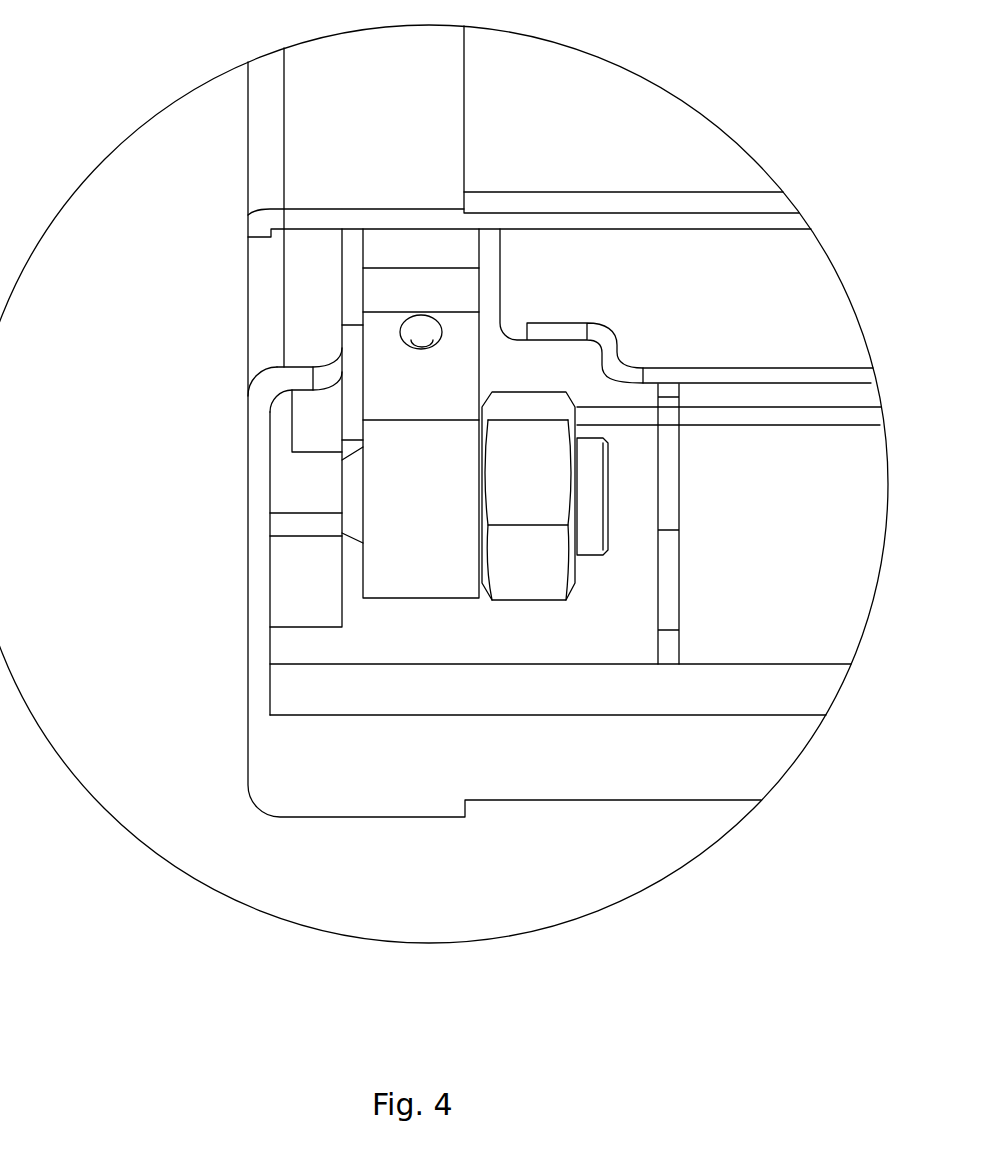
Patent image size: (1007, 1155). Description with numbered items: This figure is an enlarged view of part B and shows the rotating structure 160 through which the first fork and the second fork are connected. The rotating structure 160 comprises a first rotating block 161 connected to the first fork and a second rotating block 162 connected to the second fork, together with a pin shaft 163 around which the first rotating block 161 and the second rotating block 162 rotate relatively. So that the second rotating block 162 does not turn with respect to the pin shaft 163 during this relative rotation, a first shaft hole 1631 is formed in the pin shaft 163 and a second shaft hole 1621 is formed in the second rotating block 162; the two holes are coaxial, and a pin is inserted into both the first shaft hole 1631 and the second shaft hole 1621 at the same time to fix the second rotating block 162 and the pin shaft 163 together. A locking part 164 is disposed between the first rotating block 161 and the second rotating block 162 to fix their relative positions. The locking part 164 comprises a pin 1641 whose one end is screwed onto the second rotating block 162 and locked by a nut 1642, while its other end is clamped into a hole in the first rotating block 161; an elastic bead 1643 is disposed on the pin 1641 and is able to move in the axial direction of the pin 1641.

The part B is at (643, 74).
The rotating structure 160 is at (358, 640).
The first rotating block 161 is at (295, 602).
The second rotating block 162 is at (427, 579).
The second shaft hole 1621 is at (435, 327).
The pin shaft 163 is at (352, 432).
The first shaft hole 1631 is at (412, 340).
The elastic bead 1643 is at (355, 523).
The locking part 164 is at (630, 517).
The pin 1641 is at (593, 547).
The nut 1642 is at (535, 580).